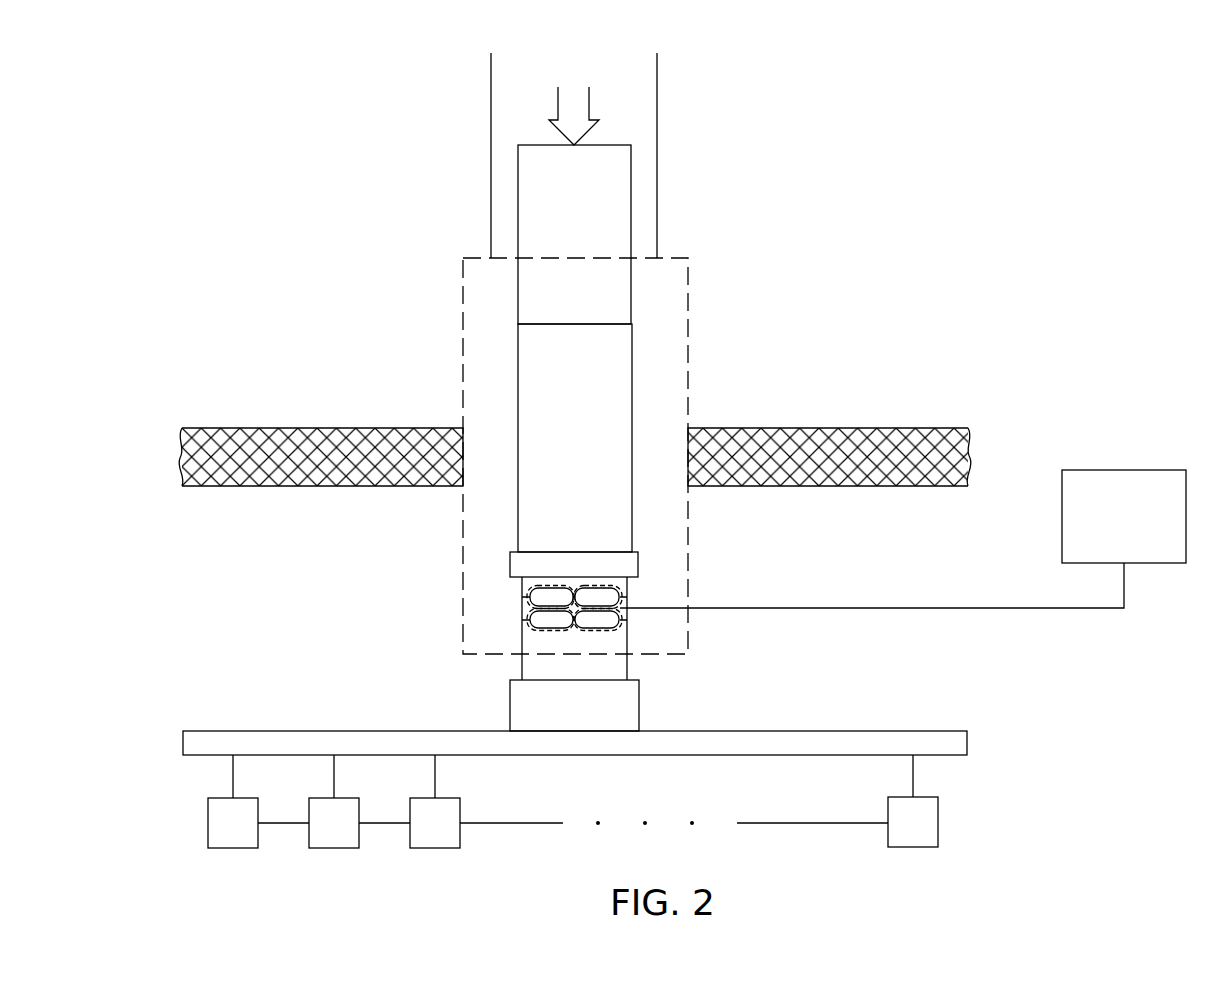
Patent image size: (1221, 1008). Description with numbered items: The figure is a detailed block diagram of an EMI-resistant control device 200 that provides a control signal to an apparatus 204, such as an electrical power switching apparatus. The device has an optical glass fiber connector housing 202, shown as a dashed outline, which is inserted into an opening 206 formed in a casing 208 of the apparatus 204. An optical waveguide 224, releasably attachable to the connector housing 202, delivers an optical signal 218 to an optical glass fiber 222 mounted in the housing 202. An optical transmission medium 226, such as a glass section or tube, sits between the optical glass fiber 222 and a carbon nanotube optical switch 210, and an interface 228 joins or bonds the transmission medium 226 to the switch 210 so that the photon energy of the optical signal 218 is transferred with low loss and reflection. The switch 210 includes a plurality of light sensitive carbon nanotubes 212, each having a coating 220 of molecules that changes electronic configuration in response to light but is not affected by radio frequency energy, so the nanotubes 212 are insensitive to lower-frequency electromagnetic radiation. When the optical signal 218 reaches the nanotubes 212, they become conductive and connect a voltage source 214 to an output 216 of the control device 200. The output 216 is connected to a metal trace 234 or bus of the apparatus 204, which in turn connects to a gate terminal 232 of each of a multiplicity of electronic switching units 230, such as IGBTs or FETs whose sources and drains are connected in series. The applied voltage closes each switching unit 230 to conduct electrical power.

The EMI-resistant control device 200 is at (900, 260).
The optical glass fiber connector housing 202 is at (462, 307).
The apparatus 204 is at (990, 775).
The opening 206 is at (699, 421).
The casing 208 is at (898, 428).
The carbon nanotube optical switch 210 is at (516, 608).
The light sensitive carbon nanotubes 212 is at (532, 590).
The voltage source 214 is at (1123, 470).
The output 216 is at (640, 706).
The optical signal 218 is at (609, 60).
The coating 220 is at (525, 598).
The optical glass fiber 222 is at (632, 205).
The optical waveguide 224 is at (657, 137).
The optical transmission medium 226 is at (632, 350).
The interface 228 is at (633, 552).
The electronic switching units 230 is at (233, 848).
The gate terminal 232 is at (913, 786).
The metal trace 234 is at (872, 731).